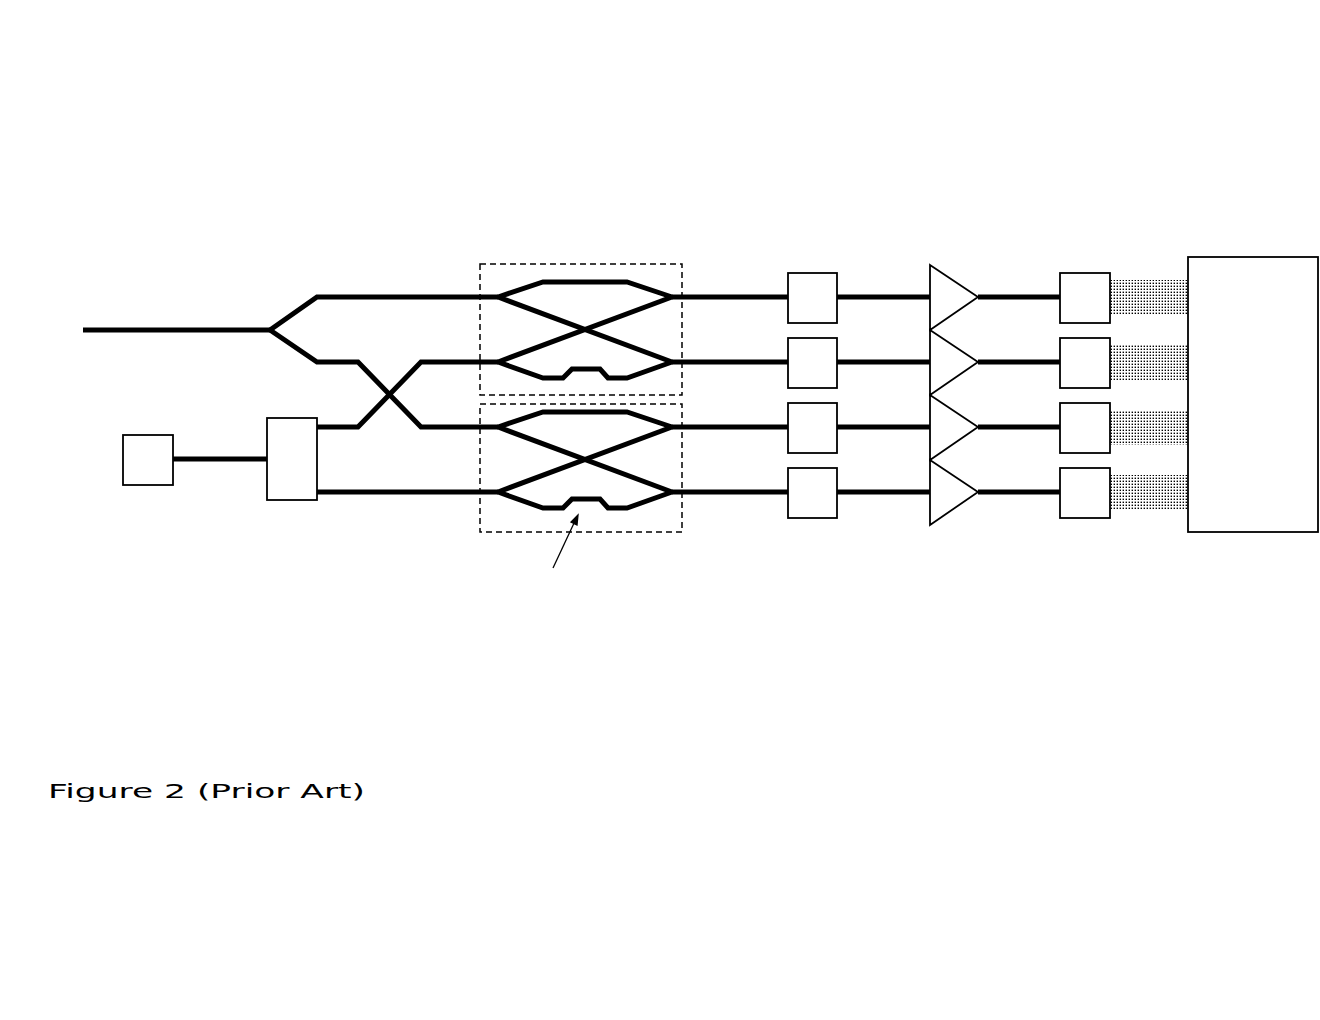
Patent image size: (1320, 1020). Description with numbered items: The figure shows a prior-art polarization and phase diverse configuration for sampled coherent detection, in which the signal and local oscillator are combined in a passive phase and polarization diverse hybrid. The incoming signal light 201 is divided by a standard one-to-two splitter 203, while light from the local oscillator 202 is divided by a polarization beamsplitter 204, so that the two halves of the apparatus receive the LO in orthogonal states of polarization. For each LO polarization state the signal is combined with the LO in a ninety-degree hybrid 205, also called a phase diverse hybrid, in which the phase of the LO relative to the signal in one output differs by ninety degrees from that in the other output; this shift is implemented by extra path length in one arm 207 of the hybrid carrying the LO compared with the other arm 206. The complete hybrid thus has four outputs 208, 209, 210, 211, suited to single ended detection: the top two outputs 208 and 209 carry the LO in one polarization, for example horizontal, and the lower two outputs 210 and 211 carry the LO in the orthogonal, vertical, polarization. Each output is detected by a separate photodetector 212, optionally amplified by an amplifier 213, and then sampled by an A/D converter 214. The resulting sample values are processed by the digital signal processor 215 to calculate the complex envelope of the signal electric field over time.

The incoming signal light 201 is at (120, 327).
The local oscillator 202 is at (148, 480).
The standard 1:2 splitter 203 is at (260, 313).
The polarization beamsplitter 204 is at (270, 480).
The 90° hybrid 205 is at (563, 374).
The other arm of the 90° hybrid 206 is at (520, 353).
The arm of the 90° hybrid with extra path length 207 is at (543, 375).
The hybrid output 208 is at (730, 295).
The hybrid output 209 is at (755, 360).
The hybrid output 210 is at (732, 429).
The hybrid output 211 is at (747, 495).
The photodetectors 212 is at (837, 473).
The amplifiers 213 is at (962, 477).
The A/D converters 214 is at (1110, 468).
The digital signal processor 215 is at (1282, 262).